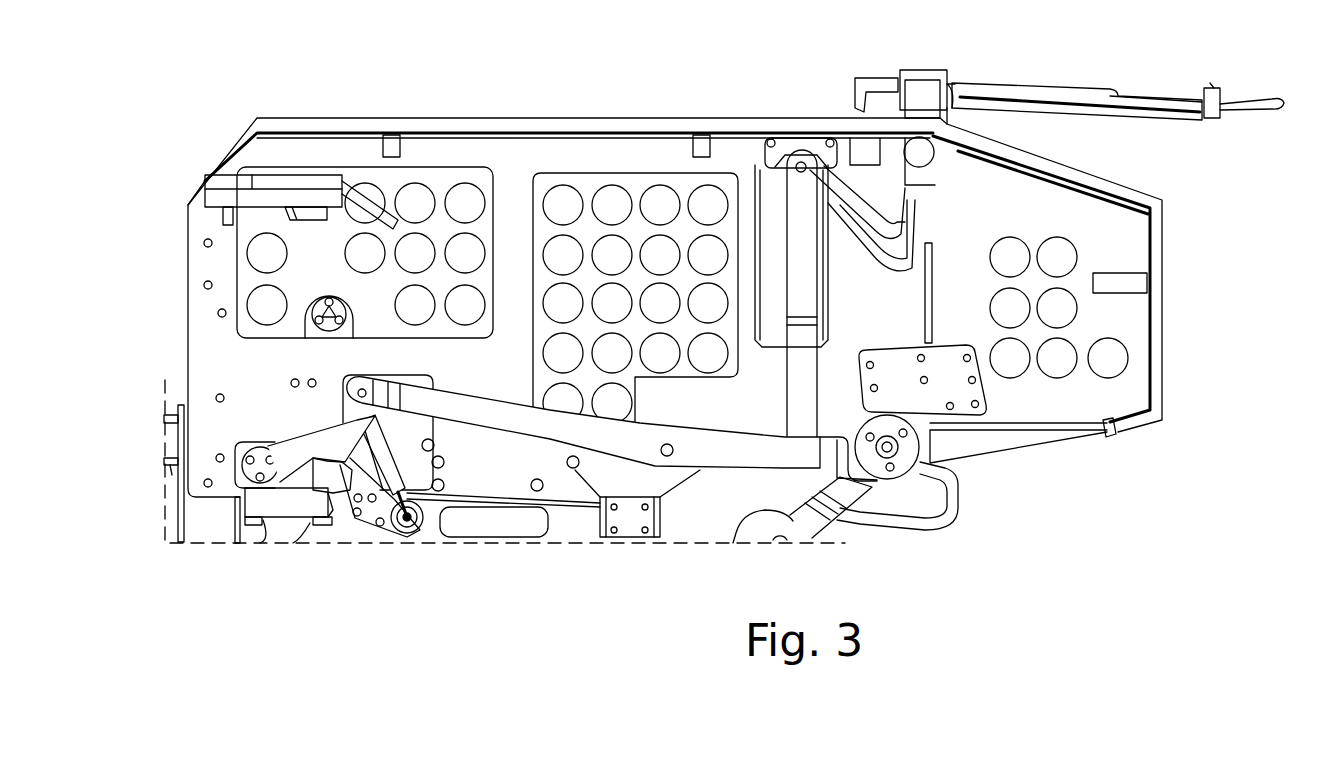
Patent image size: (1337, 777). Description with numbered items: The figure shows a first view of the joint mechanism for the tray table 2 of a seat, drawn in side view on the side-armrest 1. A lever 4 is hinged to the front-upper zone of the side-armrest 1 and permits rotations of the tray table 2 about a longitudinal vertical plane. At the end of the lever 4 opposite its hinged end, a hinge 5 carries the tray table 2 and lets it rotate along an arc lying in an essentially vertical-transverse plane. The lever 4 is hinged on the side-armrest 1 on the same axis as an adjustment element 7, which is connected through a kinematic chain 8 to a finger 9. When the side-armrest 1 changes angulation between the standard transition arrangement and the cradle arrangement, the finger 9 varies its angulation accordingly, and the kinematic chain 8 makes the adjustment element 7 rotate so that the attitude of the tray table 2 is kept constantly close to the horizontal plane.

The side-armrest 1 is at (1112, 318).
The tray table 2 is at (1040, 100).
The lever 4 is at (915, 100).
The hinge 5 is at (953, 88).
The adjustment element 7 is at (915, 228).
The kinematic chain 8 is at (797, 260).
The finger 9 is at (297, 455).